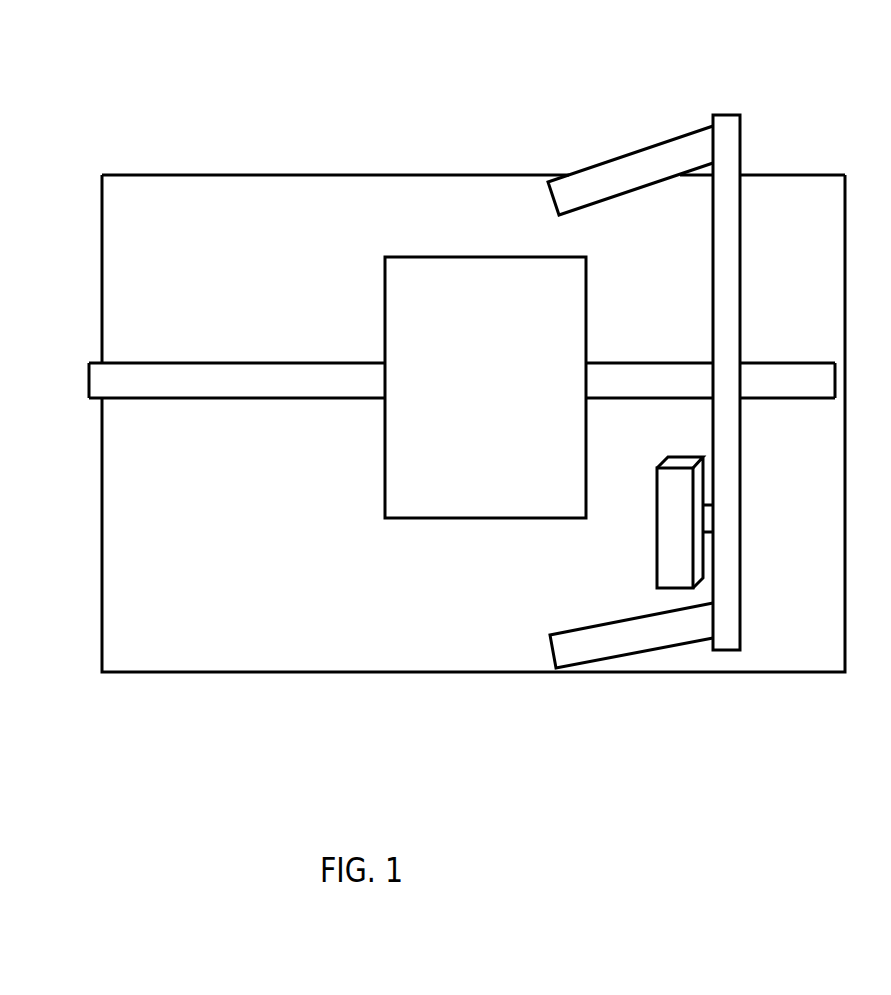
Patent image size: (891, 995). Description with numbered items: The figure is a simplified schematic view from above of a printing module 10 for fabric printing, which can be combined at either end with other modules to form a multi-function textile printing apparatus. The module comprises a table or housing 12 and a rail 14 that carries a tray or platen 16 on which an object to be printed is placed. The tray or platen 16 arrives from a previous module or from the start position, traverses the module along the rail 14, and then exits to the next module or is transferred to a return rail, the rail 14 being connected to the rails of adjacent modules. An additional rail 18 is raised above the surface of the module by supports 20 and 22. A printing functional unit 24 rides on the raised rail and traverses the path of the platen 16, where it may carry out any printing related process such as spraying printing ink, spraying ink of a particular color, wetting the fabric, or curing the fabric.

The printing module 10 is at (463, 152).
The table or housing 12 is at (148, 200).
The rail 14 is at (233, 373).
The tray or platen 16 is at (408, 270).
The additional rail 18 is at (632, 147).
The support 20 is at (727, 245).
The support 22 is at (657, 637).
The printing functional unit 24 is at (657, 530).